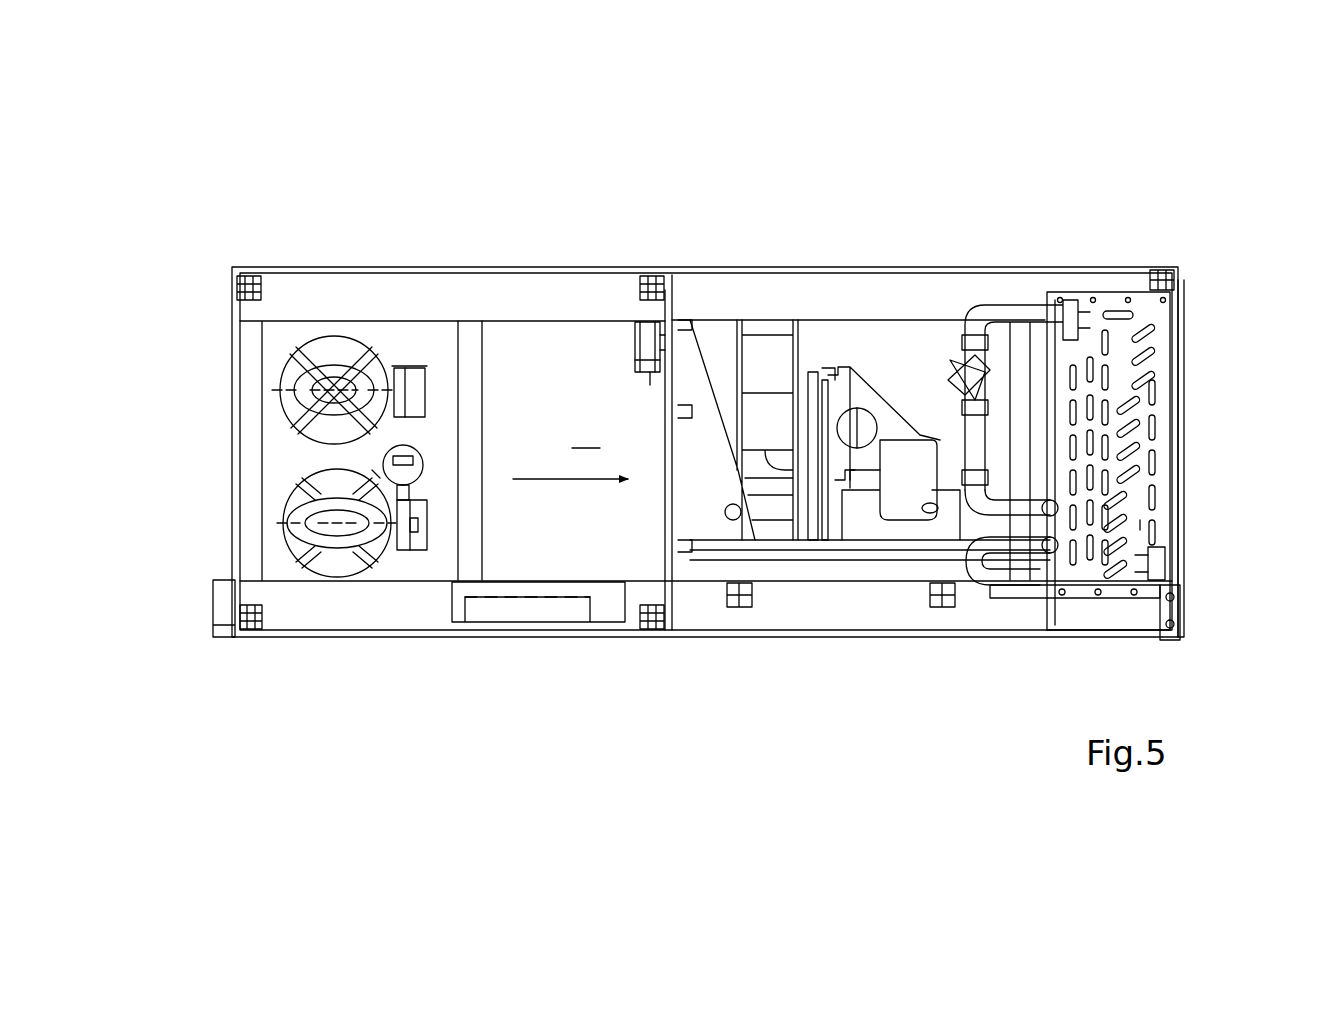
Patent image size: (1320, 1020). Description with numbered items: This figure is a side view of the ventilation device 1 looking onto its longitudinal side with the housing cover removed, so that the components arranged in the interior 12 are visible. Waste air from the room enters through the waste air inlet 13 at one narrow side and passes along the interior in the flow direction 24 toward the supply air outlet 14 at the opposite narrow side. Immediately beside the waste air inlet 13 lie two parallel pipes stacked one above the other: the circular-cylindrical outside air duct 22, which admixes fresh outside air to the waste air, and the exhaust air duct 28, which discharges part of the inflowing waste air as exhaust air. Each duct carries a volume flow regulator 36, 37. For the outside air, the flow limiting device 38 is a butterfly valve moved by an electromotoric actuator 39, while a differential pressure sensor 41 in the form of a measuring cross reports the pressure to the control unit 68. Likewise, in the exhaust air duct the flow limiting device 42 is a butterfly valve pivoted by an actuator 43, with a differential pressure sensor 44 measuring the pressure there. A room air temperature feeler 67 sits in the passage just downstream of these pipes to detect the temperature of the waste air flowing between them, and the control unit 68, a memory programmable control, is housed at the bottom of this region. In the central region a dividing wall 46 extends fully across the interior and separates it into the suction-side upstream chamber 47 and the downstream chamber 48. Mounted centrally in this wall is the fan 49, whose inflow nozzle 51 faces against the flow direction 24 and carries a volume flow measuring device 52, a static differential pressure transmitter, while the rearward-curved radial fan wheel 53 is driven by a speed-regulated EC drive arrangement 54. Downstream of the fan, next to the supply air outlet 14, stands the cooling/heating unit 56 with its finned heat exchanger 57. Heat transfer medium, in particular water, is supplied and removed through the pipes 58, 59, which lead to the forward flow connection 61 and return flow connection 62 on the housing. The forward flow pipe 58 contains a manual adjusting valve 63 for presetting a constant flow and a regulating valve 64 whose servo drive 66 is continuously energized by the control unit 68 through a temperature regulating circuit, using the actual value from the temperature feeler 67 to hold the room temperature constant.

The ventilation device 1 is at (275, 185).
The interior 12 is at (586, 438).
The waste air inlet 13 is at (213, 436).
The supply air outlet 14 is at (1205, 425).
The outside air duct 22 is at (318, 350).
The flow direction 24 is at (565, 480).
The exhaust air duct 28 is at (328, 565).
The volume flow regulator 36 is at (398, 342).
The volume flow regulator 37 is at (379, 568).
The flow limiting device 38 is at (287, 372).
The actuator 39 is at (415, 362).
The differential pressure sensor 41 is at (352, 360).
The flow limiting device 42 is at (290, 547).
The actuator 43 is at (420, 540).
The differential pressure sensor 44 is at (350, 545).
The dividing wall 46 is at (672, 600).
The upstream chamber 47 is at (565, 340).
The downstream chamber 48 is at (895, 350).
The fan 49 is at (770, 308).
The inflow nozzle 51 is at (715, 368).
The volume flow measuring device 52 is at (640, 320).
The fan wheel 53 is at (795, 335).
The drive arrangement 54 is at (822, 495).
The cooling/heating unit 56 is at (1132, 310).
The heat exchanger 57 is at (1140, 518).
The pipe 58 is at (1030, 318).
The pipe 59 is at (1040, 583).
The forward flow connection 61 is at (1058, 507).
The return flow connection 62 is at (1058, 545).
The manual adjusting valve 63 is at (963, 355).
The regulating valve 64 is at (965, 495).
The servo drive 66 is at (898, 522).
The room air temperature feeler 67 is at (415, 470).
The control unit 68 is at (565, 612).